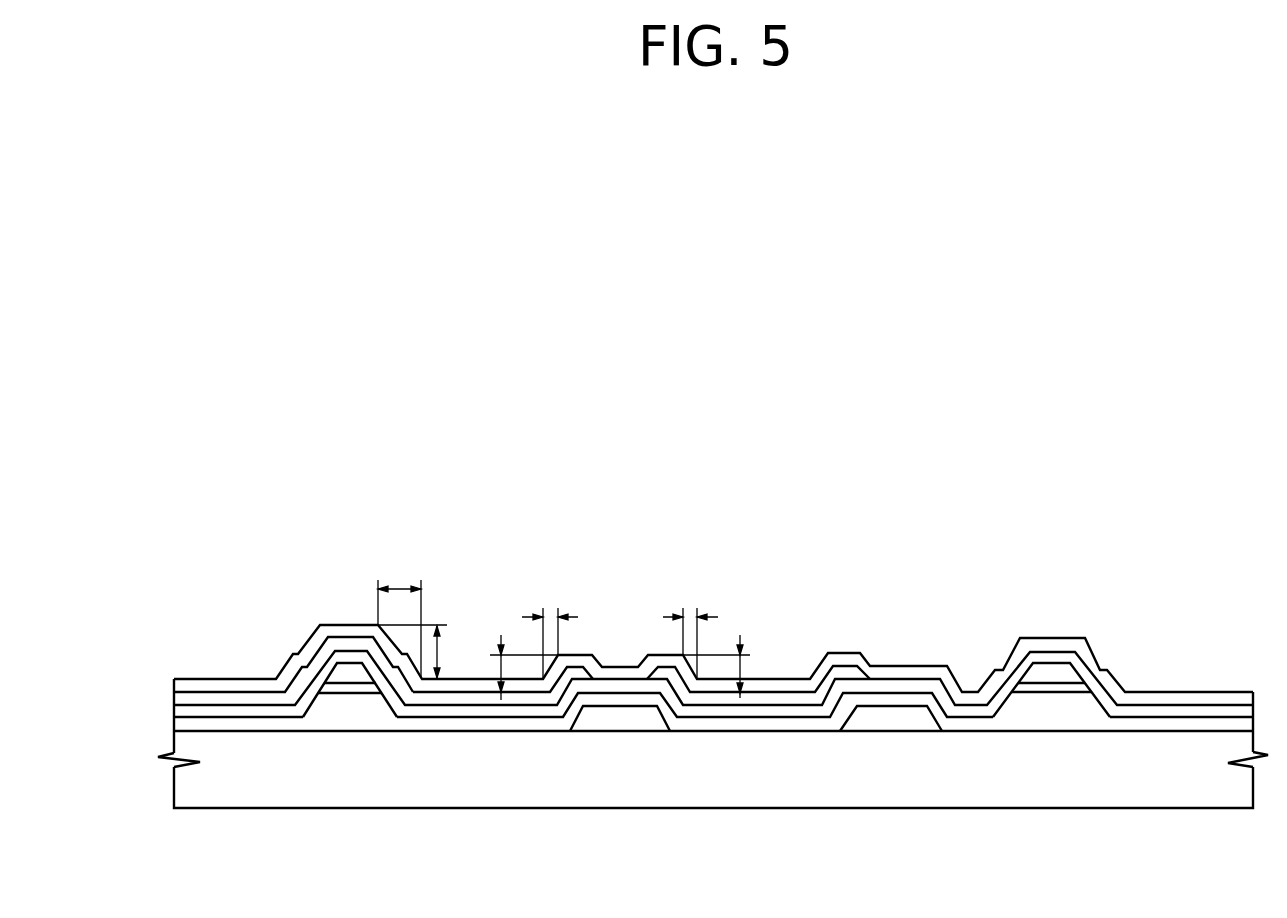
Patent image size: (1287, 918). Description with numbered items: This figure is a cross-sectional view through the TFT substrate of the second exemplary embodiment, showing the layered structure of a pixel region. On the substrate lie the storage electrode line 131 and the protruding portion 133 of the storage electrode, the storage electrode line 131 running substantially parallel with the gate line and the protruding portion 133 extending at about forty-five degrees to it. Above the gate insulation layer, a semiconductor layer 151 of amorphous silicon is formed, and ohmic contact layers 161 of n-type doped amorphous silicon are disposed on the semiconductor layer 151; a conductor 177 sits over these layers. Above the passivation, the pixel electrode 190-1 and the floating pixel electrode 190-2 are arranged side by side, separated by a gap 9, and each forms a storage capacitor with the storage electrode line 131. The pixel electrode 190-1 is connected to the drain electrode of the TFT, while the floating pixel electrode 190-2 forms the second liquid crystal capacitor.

The gap distance 9 is at (564, 628).
The storage electrode line 131 is at (893, 722).
The protruding portion 133 is at (615, 709).
The semiconductor layer 151 is at (308, 712).
The ohmic contact layers 161 is at (342, 687).
The storage capacitor conductor 177 is at (353, 675).
The pixel electrode 190-1 is at (775, 695).
The floating pixel electrode 190-2 is at (480, 698).